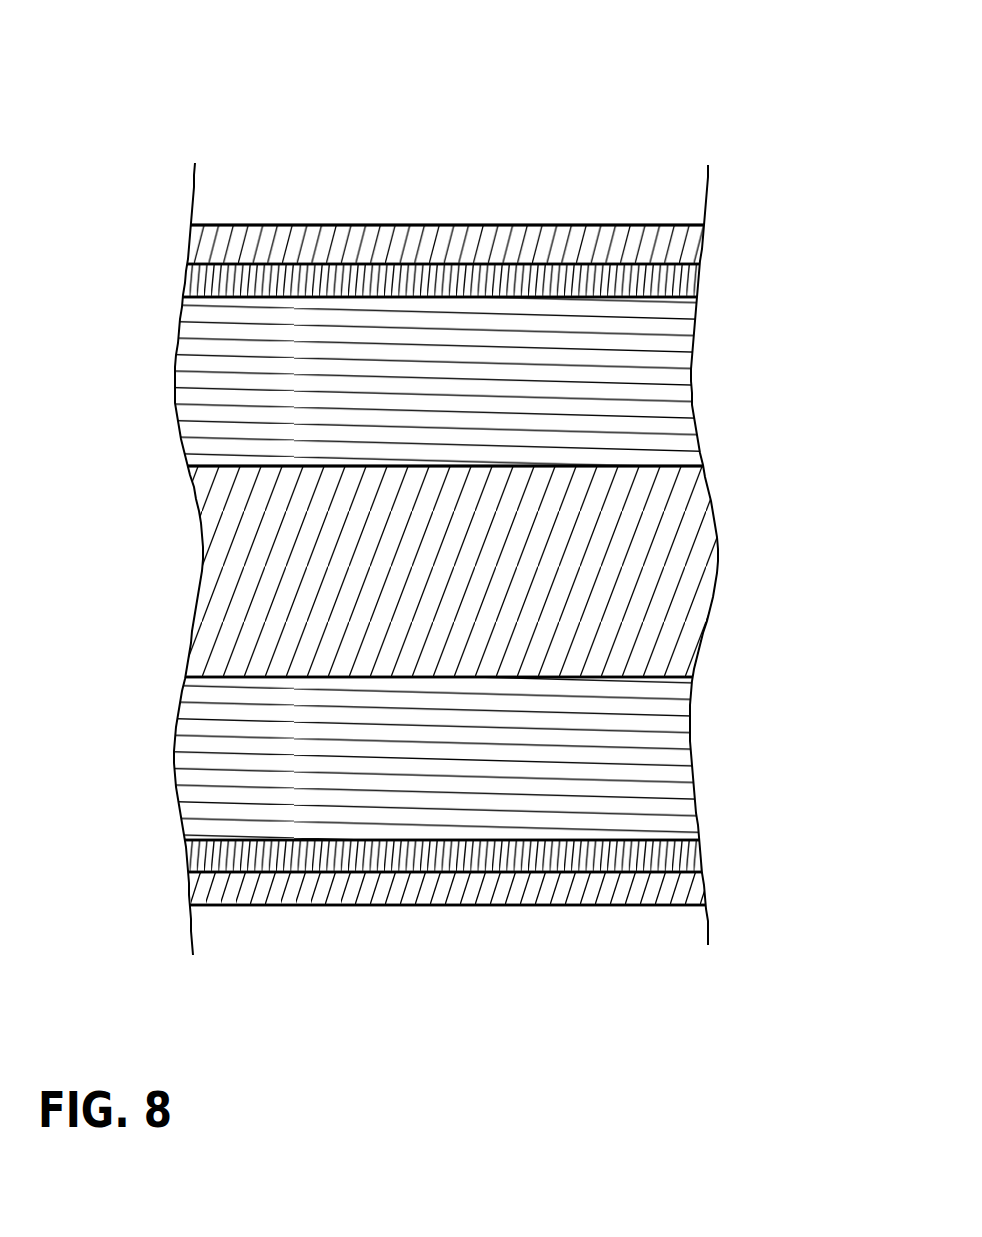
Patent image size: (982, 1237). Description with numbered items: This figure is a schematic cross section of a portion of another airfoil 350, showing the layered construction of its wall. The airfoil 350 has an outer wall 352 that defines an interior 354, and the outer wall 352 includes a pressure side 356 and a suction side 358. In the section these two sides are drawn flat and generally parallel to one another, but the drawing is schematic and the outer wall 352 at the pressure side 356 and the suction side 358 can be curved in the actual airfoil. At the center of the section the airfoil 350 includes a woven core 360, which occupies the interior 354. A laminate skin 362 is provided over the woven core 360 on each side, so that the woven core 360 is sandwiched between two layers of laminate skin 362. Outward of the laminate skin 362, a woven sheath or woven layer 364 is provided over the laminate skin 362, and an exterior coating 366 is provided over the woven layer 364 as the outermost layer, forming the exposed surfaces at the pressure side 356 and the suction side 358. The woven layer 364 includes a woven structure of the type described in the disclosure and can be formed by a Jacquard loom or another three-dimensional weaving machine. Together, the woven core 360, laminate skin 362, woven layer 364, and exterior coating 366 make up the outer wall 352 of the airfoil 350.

The airfoil 350 is at (202, 155).
The outer wall 352 is at (480, 222).
The interior 354 is at (587, 445).
The pressure side 356 is at (390, 905).
The suction side 358 is at (353, 223).
The woven core 360 is at (647, 572).
The laminate skin 362 is at (633, 378).
The woven layer 364 is at (688, 285).
The exterior coating 366 is at (685, 248).